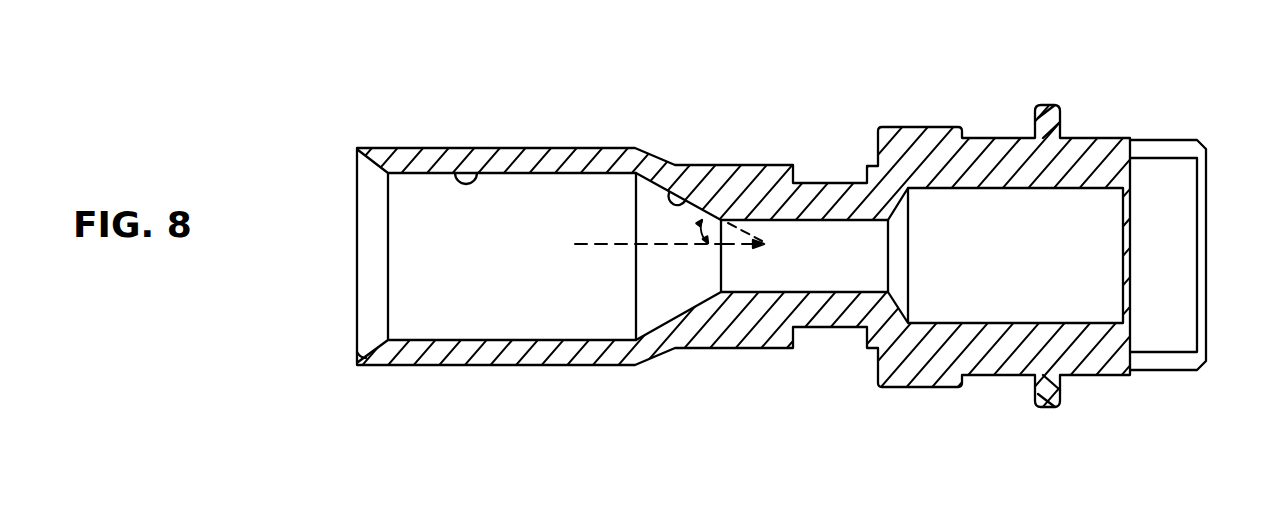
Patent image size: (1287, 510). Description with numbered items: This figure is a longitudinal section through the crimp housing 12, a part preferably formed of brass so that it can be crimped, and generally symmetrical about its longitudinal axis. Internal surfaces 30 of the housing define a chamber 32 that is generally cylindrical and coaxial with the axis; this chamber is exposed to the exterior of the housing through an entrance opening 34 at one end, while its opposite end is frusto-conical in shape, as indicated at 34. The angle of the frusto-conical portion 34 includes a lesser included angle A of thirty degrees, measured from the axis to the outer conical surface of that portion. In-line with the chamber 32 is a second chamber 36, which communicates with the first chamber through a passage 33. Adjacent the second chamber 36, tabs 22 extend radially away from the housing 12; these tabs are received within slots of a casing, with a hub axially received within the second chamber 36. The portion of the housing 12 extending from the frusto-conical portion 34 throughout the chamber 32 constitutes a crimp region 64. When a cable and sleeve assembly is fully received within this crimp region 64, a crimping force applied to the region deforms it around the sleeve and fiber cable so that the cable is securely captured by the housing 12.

The crimp housing 12 is at (811, 118).
The tabs 22 is at (1055, 103).
The internal surfaces 30 is at (477, 178).
The chamber 32 is at (461, 267).
The passage 33 is at (832, 269).
The frusto-conical portion 34 is at (687, 212).
The second chamber 36 is at (1038, 265).
The crimp region 64 is at (728, 387).
The included angle A is at (703, 226).